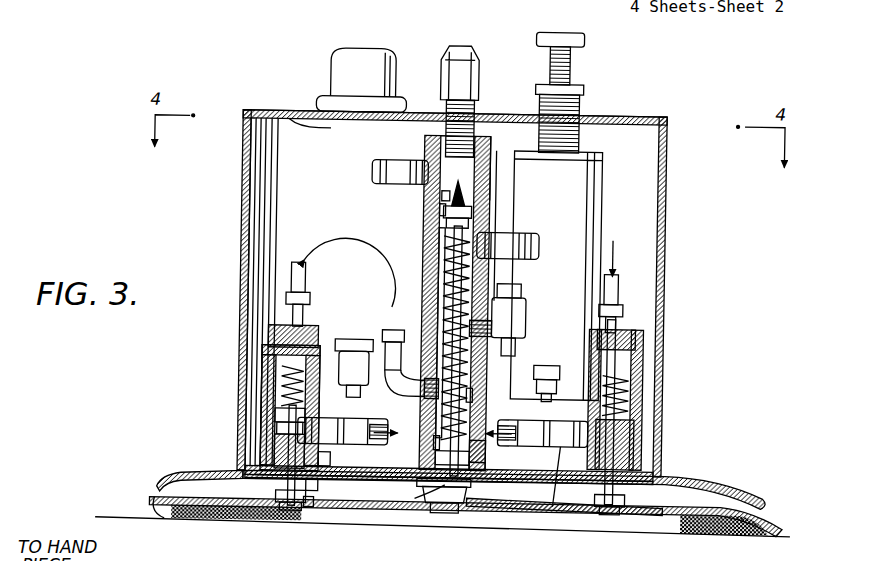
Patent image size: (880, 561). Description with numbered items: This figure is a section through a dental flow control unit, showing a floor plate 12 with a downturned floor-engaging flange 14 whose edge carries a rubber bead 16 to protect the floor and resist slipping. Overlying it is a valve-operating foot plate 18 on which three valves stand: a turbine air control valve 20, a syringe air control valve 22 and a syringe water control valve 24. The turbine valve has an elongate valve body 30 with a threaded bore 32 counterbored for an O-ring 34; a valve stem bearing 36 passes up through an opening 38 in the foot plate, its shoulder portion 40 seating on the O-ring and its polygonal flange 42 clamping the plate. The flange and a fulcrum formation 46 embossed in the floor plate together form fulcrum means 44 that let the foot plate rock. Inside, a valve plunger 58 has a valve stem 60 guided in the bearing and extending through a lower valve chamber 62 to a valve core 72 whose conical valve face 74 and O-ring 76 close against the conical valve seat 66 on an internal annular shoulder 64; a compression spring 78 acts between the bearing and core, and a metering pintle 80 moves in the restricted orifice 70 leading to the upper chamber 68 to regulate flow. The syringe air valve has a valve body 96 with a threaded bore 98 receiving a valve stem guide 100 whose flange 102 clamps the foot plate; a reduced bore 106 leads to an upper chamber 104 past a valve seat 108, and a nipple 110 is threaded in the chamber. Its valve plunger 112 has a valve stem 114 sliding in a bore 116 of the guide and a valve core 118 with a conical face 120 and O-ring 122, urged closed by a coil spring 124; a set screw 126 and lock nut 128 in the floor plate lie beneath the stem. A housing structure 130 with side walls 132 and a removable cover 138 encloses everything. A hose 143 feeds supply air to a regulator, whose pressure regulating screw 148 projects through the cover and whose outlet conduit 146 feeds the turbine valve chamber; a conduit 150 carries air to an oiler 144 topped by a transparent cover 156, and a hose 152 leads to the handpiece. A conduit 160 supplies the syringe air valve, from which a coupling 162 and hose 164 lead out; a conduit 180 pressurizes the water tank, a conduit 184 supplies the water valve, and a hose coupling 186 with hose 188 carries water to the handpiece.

The floor plate 12 is at (704, 525).
The floor-engaging flange 14 is at (766, 514).
The rubber bead 16 is at (784, 532).
The foot plate 18 is at (708, 474).
The turbine air control valve 20 is at (421, 138).
The syringe air control valve 22 is at (246, 372).
The syringe water control valve 24 is at (646, 374).
The valve body 30 is at (478, 140).
The threaded bore 32 is at (438, 459).
The O-ring 34 is at (407, 479).
The valve stem bearing 36 is at (478, 450).
The opening 38 is at (478, 466).
The shoulder portion 40 is at (430, 499).
The polygonal flange 42 is at (437, 507).
The fulcrum means 44 is at (470, 501).
The fulcrum formation 46 is at (490, 498).
The valve plunger 58 is at (443, 279).
The valve stem 60 is at (462, 379).
The lower valve chamber 62 is at (474, 396).
The internal annular shoulder 64 is at (470, 208).
The conical valve seat 66 is at (468, 222).
The upper chamber 68 is at (486, 156).
The restricted orifice 70 is at (448, 198).
The valve core 72 is at (526, 239).
The valve face 74 is at (444, 210).
The O-ring 76 is at (446, 222).
The compression spring 78 is at (440, 294).
The metering pintle 80 is at (458, 185).
The valve body 96 is at (312, 294).
The threaded bore 98 is at (321, 465).
The valve stem guide 100 is at (264, 474).
The flange 102 is at (383, 480).
The chamber 104 is at (263, 382).
The reduced bore 106 is at (277, 462).
The valve seat 108 is at (277, 430).
The nipple 110 is at (269, 335).
The valve plunger 112 is at (292, 494).
The valve stem 114 is at (310, 511).
The bore 116 is at (320, 495).
The valve core 118 is at (263, 399).
The conical face 120 is at (279, 445).
The O-ring 122 is at (281, 408).
The coil spring 124 is at (263, 356).
The set screw 126 is at (296, 515).
The lock nut 128 is at (287, 508).
The housing structure 130 is at (239, 208).
The side walls 132 is at (240, 168).
The cover 138 is at (636, 114).
The hose 143 is at (549, 367).
The oiler 144 is at (314, 118).
The conduit 146 is at (535, 248).
The pressure regulating screw 148 is at (582, 40).
The conduit 150 is at (370, 171).
The hose 152 is at (362, 339).
The transparent cover 156 is at (330, 74).
The conduit 160 is at (388, 333).
The coupling 162 is at (332, 420).
The hose 164 is at (389, 423).
The conduit 180 is at (526, 305).
The conduit 184 is at (616, 294).
The hose coupling 186 is at (561, 505).
The hose 188 is at (528, 423).